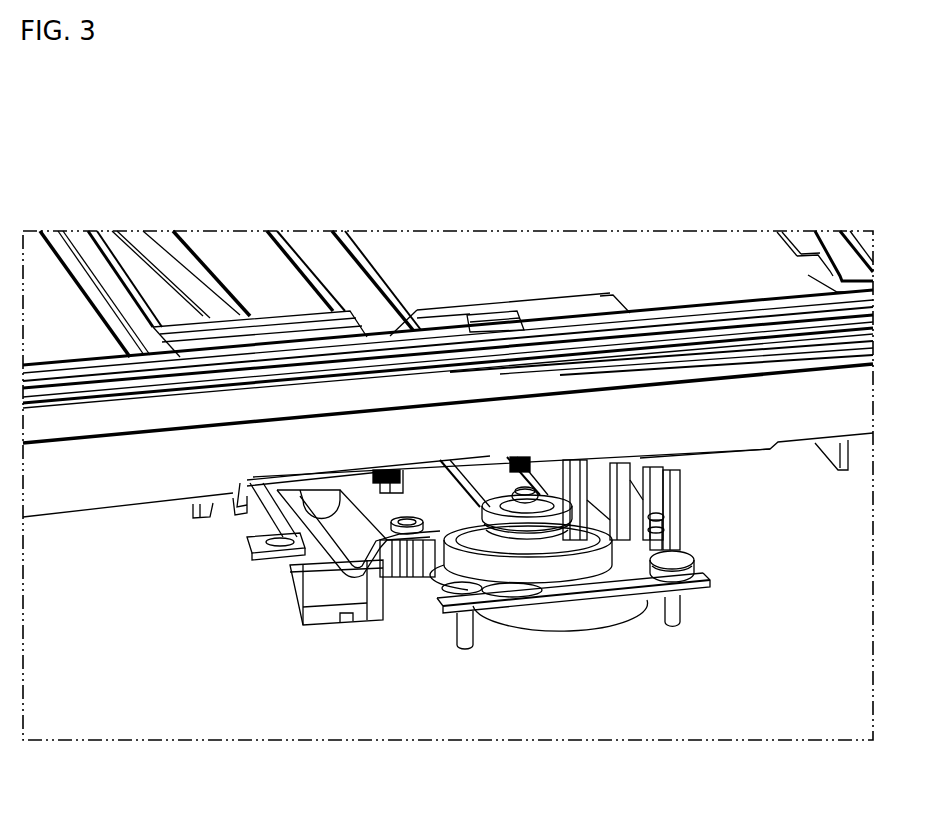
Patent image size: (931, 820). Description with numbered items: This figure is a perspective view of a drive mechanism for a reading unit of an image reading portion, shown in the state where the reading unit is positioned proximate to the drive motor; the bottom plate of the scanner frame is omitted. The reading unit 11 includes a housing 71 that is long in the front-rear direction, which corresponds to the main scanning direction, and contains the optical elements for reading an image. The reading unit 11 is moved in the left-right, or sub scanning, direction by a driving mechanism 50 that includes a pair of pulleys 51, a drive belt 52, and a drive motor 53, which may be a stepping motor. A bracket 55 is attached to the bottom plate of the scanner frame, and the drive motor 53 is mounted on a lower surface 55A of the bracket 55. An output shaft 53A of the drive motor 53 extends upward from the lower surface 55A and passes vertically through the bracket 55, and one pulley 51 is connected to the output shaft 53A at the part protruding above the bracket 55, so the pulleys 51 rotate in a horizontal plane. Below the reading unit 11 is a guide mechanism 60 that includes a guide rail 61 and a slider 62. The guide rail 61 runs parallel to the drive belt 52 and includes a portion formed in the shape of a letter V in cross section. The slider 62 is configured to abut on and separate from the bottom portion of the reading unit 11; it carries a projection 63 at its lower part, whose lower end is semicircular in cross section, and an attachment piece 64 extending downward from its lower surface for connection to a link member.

The reading unit 11 is at (800, 478).
The driving mechanism 50 is at (583, 682).
The pulley 51 is at (563, 552).
The drive belt 52 is at (388, 280).
The drive motor 53 is at (542, 632).
The output shaft 53A is at (502, 493).
The bracket 55 is at (708, 588).
The lower surface 55A is at (650, 598).
The guide mechanism 60 is at (388, 662).
The guide rail 61 is at (372, 585).
The slider 62 is at (237, 515).
The projection 63 is at (352, 545).
The attachment piece 64 is at (325, 545).
The housing 71 is at (760, 450).